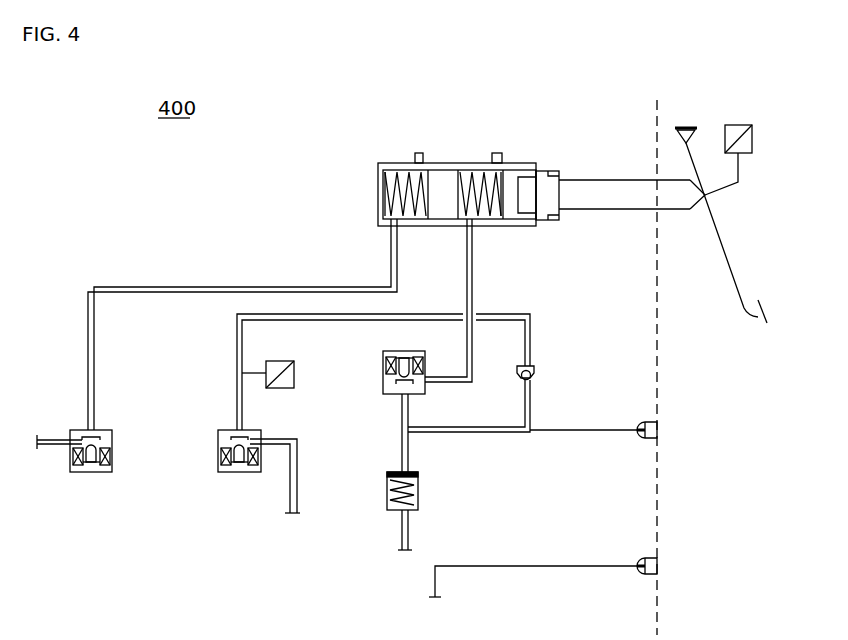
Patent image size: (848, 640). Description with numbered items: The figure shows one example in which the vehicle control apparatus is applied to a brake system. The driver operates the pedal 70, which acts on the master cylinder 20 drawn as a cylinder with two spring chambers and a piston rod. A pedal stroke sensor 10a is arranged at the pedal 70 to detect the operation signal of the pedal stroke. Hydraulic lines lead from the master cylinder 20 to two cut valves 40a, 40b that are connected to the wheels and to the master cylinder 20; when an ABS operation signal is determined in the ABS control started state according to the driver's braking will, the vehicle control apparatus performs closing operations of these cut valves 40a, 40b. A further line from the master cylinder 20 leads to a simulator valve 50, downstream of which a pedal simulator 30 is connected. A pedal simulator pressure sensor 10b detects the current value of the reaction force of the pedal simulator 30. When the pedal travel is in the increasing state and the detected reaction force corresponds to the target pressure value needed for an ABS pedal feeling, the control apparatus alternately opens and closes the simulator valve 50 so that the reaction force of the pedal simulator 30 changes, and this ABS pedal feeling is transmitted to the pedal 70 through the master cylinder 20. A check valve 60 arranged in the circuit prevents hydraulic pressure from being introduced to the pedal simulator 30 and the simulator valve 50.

The master cylinder 20 is at (450, 163).
The pedal stroke sensor 10a is at (752, 140).
The pedal simulator pressure sensor 10b is at (294, 376).
The pedal 70 is at (767, 316).
The cut valve 40a is at (93, 472).
The cut valve 40b is at (241, 472).
The simulator valve 50 is at (392, 392).
The check valve 60 is at (536, 371).
The pedal simulator 30 is at (418, 487).